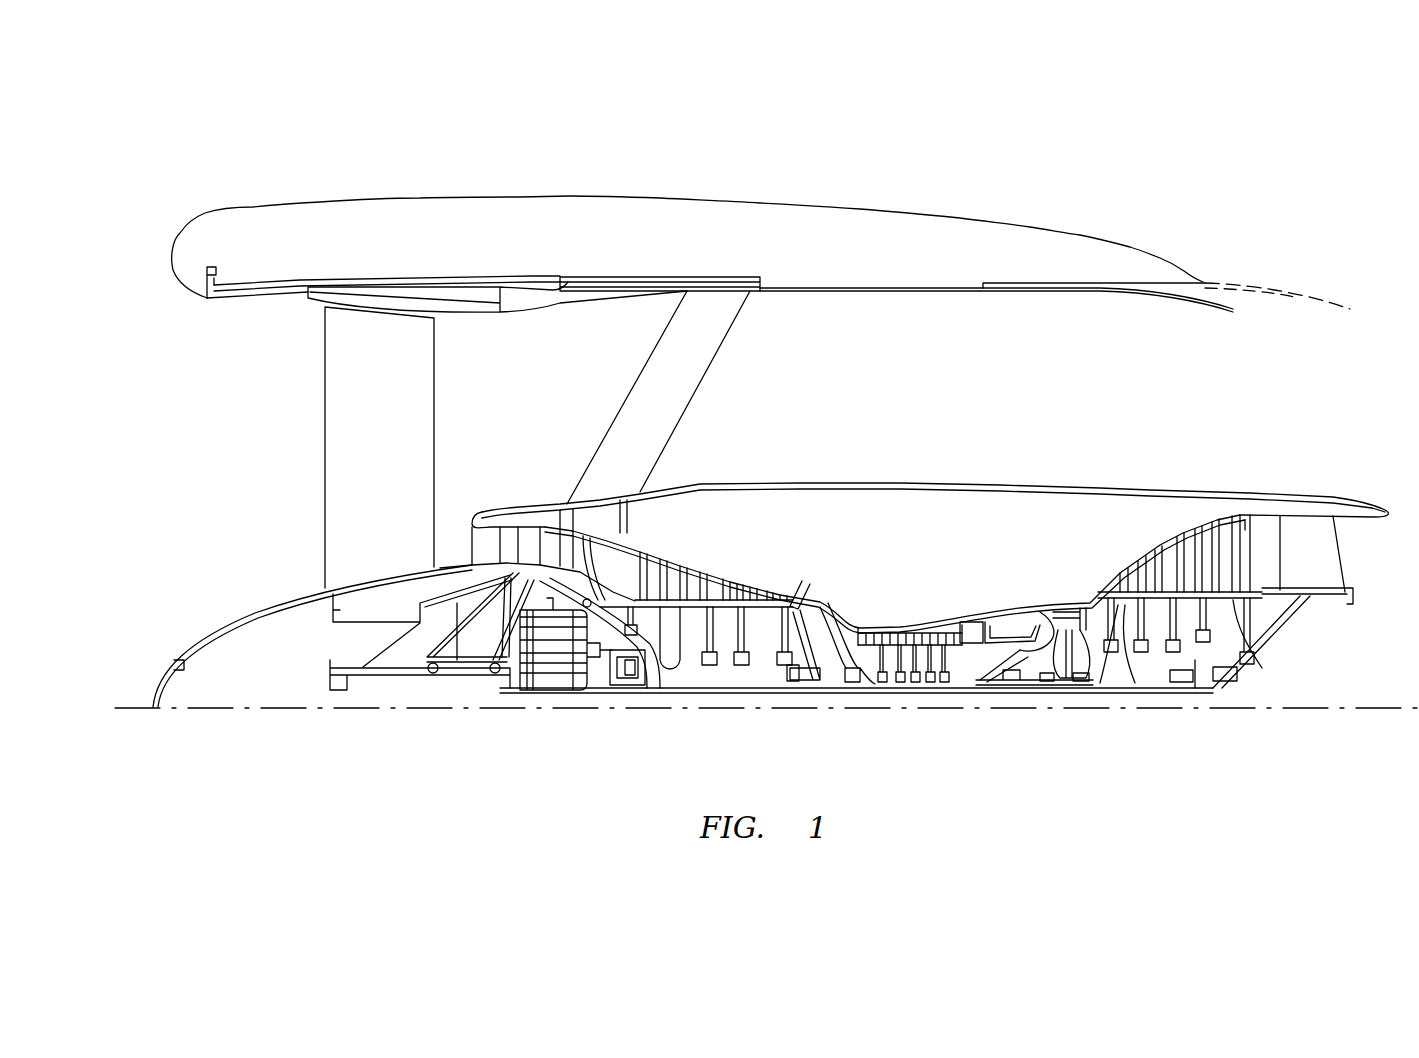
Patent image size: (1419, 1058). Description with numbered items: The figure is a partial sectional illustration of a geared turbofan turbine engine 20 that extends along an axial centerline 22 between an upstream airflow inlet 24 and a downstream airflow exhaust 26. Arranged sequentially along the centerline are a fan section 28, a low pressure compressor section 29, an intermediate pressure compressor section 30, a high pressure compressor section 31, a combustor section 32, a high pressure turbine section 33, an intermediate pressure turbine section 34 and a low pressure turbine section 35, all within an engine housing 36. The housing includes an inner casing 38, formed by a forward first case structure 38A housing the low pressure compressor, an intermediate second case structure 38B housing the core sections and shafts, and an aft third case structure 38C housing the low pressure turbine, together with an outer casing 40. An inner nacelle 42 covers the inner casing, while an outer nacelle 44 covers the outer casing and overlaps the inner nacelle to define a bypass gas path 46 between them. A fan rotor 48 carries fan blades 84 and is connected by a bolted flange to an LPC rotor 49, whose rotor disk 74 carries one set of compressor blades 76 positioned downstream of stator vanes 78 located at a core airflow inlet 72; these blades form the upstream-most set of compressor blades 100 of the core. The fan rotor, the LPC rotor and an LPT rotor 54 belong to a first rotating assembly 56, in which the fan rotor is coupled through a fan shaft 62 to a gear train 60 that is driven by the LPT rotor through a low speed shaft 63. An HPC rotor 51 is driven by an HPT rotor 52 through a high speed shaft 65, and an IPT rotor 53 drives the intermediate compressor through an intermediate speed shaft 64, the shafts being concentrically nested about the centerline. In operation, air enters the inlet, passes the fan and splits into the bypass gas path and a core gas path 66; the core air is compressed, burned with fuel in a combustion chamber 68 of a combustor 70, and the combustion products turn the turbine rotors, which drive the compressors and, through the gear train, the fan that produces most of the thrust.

The geared turbofan turbine engine 20 is at (203, 173).
The axial centerline 22 is at (1305, 715).
The upstream airflow inlet 24 is at (190, 298).
The downstream airflow exhaust 26 is at (1390, 514).
The fan section 28 is at (297, 497).
The low pressure compressor (LPC) section 29 is at (500, 500).
The intermediate pressure compressor (IPC) section 30 is at (722, 555).
The high pressure compressor (HPC) section 31 is at (916, 605).
The combustor section 32 is at (1008, 597).
The high pressure turbine (HPT) section 33 is at (1073, 575).
The intermediate pressure turbine (IPT) section 34 is at (1124, 560).
The low pressure turbine (LPT) section 35 is at (1190, 527).
The engine housing 36 is at (796, 190).
The inner casing 38 is at (812, 580).
The first case structure 38A is at (553, 464).
The second case structure 38B is at (869, 582).
The third case structure 38C is at (1241, 482).
The outer casing 40 is at (374, 276).
The inner nacelle 42 is at (1306, 492).
The outer nacelle 44 is at (578, 192).
The bypass gas path 46 is at (860, 373).
The fan rotor 48 is at (325, 605).
The LPC rotor 49 is at (490, 662).
The HPC rotor 51 is at (877, 668).
The HPT rotor 52 is at (1075, 682).
The IPT rotor 53 is at (1130, 682).
The LPT rotor 54 is at (1247, 610).
The first rotating assembly 56 is at (637, 692).
The gear train 60 is at (520, 700).
The fan shaft 62 is at (375, 682).
The low speed shaft 63 is at (708, 695).
The intermediate speed shaft 64 is at (830, 692).
The high speed shaft 65 is at (991, 688).
The core gas path 66 is at (545, 555).
The combustion chamber 68 is at (1032, 620).
The combustor 70 is at (1012, 615).
The core airflow inlet 72 is at (473, 548).
The rotor disk 74 is at (435, 667).
The compressor blades 76 is at (510, 547).
The stator vanes 78 is at (487, 538).
The fan blades 84 is at (396, 436).
The upstream-most set of compressor blades 100 is at (590, 557).